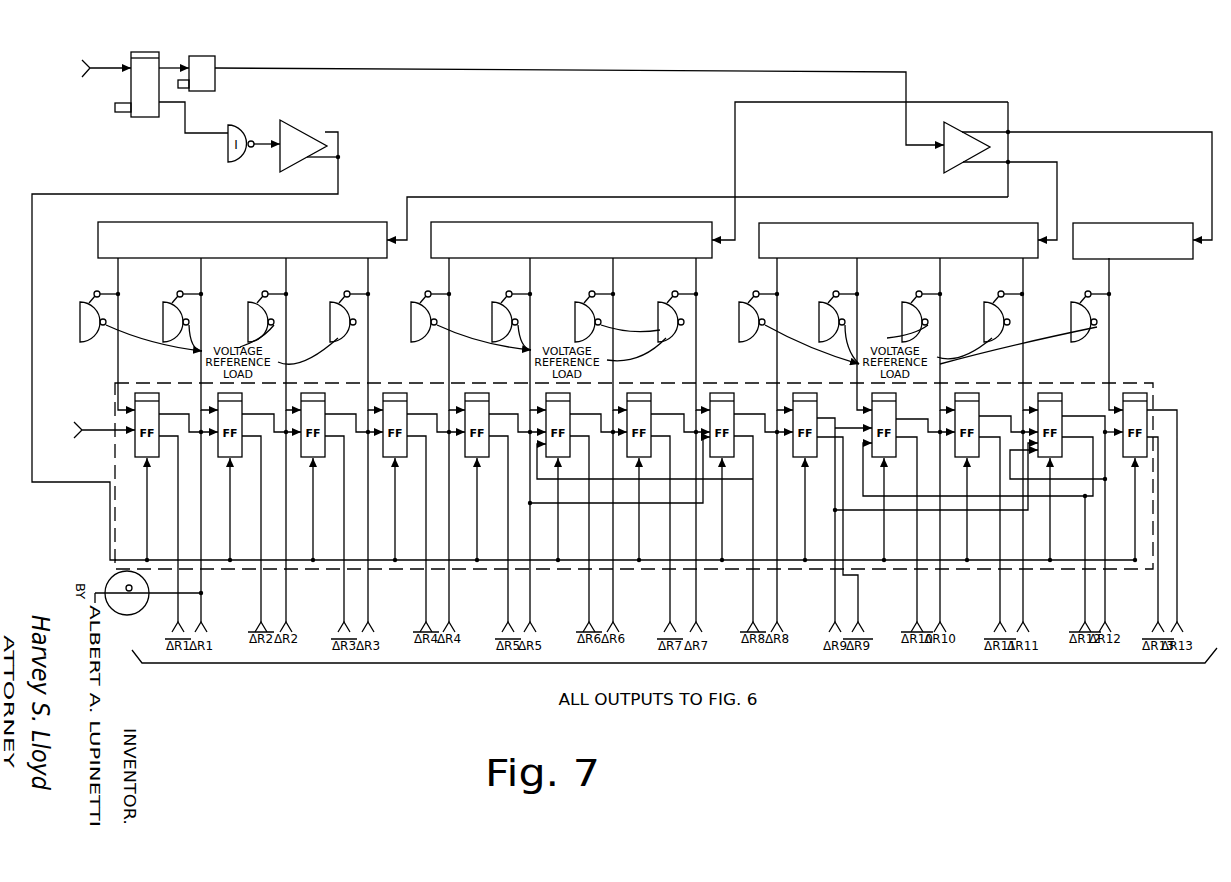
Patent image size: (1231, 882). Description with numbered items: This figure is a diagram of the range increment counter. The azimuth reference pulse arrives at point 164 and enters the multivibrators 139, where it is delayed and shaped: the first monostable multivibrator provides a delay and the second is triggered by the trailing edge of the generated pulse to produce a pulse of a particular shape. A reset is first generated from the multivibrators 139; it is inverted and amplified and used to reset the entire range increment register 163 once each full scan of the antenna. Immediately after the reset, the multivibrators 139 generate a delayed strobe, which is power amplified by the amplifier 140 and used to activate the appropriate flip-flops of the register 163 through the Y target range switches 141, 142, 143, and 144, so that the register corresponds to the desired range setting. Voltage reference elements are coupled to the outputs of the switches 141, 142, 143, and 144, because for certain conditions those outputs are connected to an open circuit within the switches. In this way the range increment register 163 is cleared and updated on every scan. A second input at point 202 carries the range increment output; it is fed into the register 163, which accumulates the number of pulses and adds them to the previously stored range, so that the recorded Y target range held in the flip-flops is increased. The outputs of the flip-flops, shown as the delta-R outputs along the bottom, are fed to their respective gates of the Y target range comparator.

The point 164 is at (106, 53).
The multivibrators 139 is at (127, 46).
The power amplifier 140 is at (968, 124).
The Y target range switch 141 is at (364, 228).
The Y target range switch 142 is at (659, 228).
The Y target range switch 143 is at (897, 227).
The Y target range switch 144 is at (1141, 230).
The range increment register 163 is at (1120, 387).
The point 202 is at (105, 418).